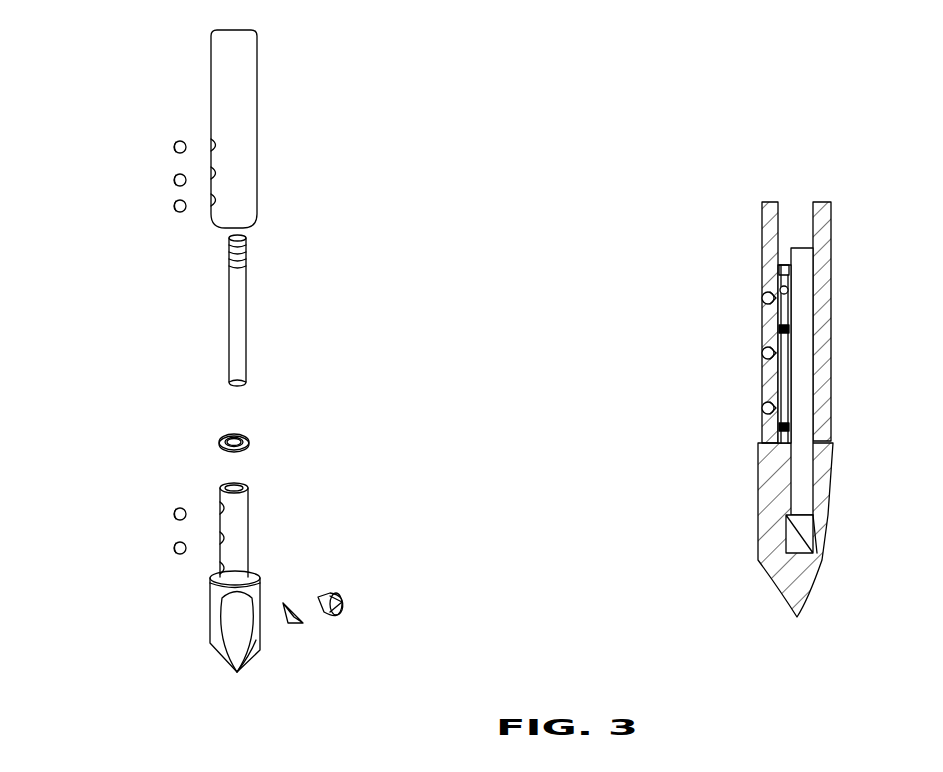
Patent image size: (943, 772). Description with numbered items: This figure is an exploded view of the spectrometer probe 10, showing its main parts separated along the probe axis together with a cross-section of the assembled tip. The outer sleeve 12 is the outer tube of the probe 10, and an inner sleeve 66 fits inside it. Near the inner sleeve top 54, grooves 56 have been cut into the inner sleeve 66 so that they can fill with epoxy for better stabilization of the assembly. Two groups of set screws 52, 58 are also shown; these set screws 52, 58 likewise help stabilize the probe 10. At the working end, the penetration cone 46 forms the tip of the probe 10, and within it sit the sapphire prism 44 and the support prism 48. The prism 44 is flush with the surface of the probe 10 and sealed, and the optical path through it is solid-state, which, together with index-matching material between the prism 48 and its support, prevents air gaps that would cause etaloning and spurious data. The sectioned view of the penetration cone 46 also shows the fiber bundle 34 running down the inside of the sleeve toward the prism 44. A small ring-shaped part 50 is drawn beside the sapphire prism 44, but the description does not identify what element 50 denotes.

The spectrometer probe 10 is at (148, 78).
The outer sleeve 12 is at (259, 168).
The fiber bundle 34 is at (768, 272).
The sapphire prism 44 is at (325, 592).
The penetration cone 46 is at (218, 660).
The support prism 48 is at (296, 626).
The insert ring 50 is at (346, 612).
The set screws 52 is at (251, 444).
The inner sleeve top 54 is at (249, 241).
The grooves 56 is at (226, 256).
The set screws 58 is at (171, 146).
The inner sleeve 66 is at (249, 312).